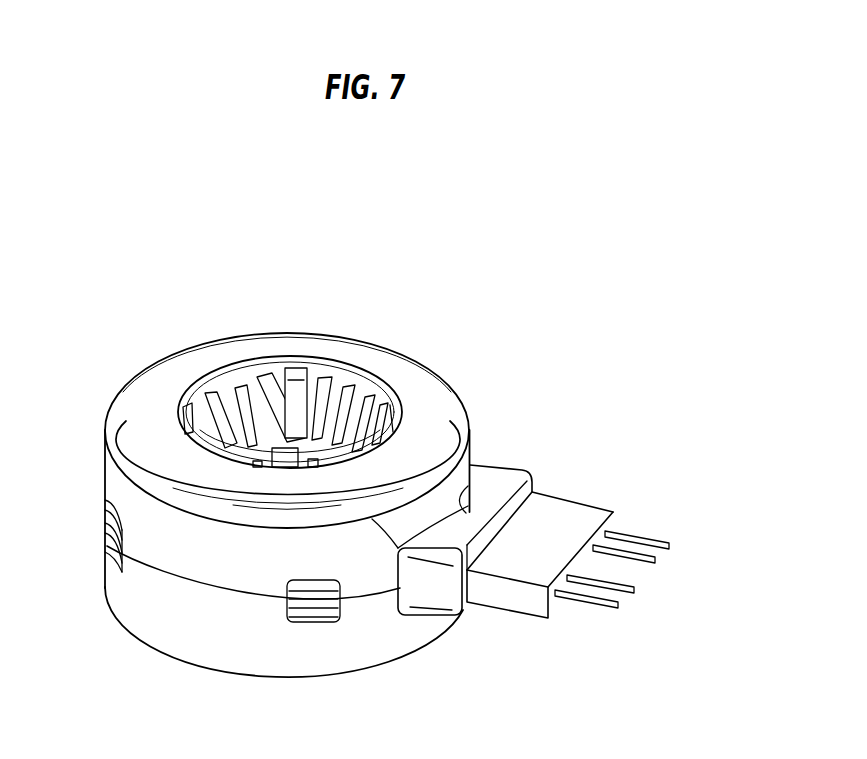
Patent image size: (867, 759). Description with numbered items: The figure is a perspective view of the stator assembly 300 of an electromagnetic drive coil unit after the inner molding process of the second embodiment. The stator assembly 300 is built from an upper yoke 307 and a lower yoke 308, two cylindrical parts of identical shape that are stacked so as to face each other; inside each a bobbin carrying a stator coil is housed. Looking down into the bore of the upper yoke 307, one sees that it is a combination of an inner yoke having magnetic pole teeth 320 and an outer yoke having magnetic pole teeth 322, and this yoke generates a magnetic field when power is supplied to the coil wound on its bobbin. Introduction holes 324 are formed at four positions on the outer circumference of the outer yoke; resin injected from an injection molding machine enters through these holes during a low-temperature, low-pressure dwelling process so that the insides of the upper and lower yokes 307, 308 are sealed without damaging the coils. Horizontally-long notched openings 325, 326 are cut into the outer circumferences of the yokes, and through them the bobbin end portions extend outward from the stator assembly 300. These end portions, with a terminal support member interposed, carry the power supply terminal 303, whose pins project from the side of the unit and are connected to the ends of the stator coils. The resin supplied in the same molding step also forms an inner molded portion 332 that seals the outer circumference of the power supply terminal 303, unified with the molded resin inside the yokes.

The stator assembly 300 is at (282, 282).
The power supply terminal 303 is at (633, 590).
The upper yoke 307 is at (358, 357).
The lower yoke 308 is at (323, 647).
The magnetic pole teeth 320 is at (270, 388).
The magnetic pole teeth 322 is at (242, 390).
The introduction holes 324 is at (107, 522).
The notched opening 325 is at (470, 465).
The notched opening 326 is at (395, 592).
The inner molded portion 332 is at (427, 590).